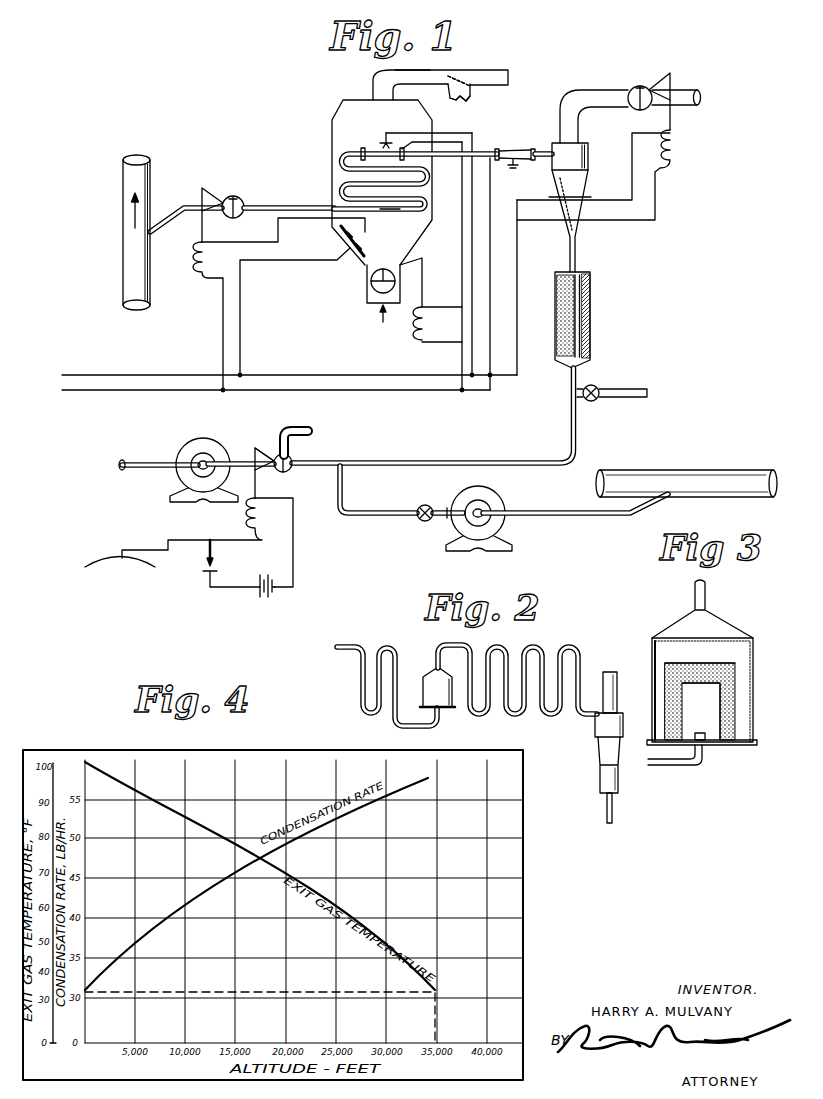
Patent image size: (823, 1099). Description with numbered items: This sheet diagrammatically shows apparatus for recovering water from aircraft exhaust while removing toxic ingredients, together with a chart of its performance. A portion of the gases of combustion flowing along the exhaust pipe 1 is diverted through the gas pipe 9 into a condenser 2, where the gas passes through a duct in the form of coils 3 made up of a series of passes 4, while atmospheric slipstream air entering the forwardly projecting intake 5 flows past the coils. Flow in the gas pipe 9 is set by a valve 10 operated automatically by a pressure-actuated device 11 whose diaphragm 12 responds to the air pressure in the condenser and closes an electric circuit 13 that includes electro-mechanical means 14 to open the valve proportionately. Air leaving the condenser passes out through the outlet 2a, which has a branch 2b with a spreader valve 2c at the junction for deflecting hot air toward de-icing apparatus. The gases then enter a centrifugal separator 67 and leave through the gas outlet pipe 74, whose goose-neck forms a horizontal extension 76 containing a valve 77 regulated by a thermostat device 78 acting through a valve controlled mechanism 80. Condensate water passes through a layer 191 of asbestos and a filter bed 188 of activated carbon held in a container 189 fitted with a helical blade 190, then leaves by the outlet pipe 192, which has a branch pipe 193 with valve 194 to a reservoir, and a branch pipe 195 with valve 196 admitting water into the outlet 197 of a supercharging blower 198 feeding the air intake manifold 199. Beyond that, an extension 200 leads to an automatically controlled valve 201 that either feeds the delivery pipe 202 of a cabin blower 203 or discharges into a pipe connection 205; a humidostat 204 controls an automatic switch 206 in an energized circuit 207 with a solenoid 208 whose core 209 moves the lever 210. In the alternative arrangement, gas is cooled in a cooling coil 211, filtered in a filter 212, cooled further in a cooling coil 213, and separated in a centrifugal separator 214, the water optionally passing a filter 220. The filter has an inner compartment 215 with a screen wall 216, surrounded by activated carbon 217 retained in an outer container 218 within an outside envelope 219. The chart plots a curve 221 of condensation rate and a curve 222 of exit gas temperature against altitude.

In FIG. 1, the exhaust pipe 1 is at (147, 181).
In FIG. 1, the condenser 2 is at (332, 135).
In FIG. 1, the outlet 2a is at (415, 72).
In FIG. 1, the branch 2b is at (472, 98).
In FIG. 1, the spreader valve 2c is at (468, 75).
In FIG. 1, the coils 3 is at (340, 182).
In FIG. 1, the passes 4 is at (388, 201).
In FIG. 1, the intake 5 is at (367, 295).
In FIG. 1, the gas pipe 9 is at (262, 204).
In FIG. 1, the valve 10 is at (231, 196).
In FIG. 1, the pressure-actuated device 11 is at (352, 250).
In FIG. 1, the diaphragm 12 is at (355, 241).
In FIG. 1, the electric circuit 13 is at (286, 261).
In FIG. 1, the electro-mechanical means 14 is at (198, 266).
In FIG. 1, the separator 67 is at (590, 165).
In FIG. 1, the gas outlet pipe 74 is at (566, 109).
In FIG. 1, the horizontal extension 76 is at (687, 96).
In FIG. 1, the valve 77 is at (637, 86).
In FIG. 1, the thermostat device 78 is at (509, 150).
In FIG. 1, the valve controlled mechanism 80 is at (676, 150).
In FIG. 1, the filter bed 188 is at (557, 304).
In FIG. 1, the container 189 is at (592, 300).
In FIG. 1, the helical blade 190 is at (562, 322).
In FIG. 1, the layer of asbestos 191 is at (588, 274).
In FIG. 1, the outlet pipe 192 is at (569, 410).
In FIG. 1, the branch pipe 193 is at (634, 389).
In FIG. 1, the valve 194 is at (599, 386).
In FIG. 1, the branch pipe 195 is at (392, 518).
In FIG. 1, the valve 196 is at (431, 506).
In FIG. 1, the outlet 197 is at (533, 510).
In FIG. 1, the supercharging blower 198 is at (486, 498).
In FIG. 1, the air intake manifold 199 is at (683, 470).
In FIG. 1, the extension 200 is at (240, 458).
In FIG. 1, the automatically controlled valve 201 is at (293, 460).
In FIG. 1, the delivery pipe 202 is at (168, 461).
In FIG. 1, the blower 203 is at (183, 438).
In FIG. 1, the humidostat 204 is at (130, 562).
In FIG. 1, the pipe connection 205 is at (300, 420).
In FIG. 1, the automatic switch 206 is at (218, 565).
In FIG. 1, the energized circuit 207 is at (295, 530).
In FIG. 1, the solenoid 208 is at (249, 512).
In FIG. 1, the core 209 is at (258, 495).
In FIG. 1, the lever 210 is at (271, 447).
In FIG. 2, the cooling coil 211 is at (359, 681).
In FIG. 2, the filter 212 is at (455, 700).
In FIG. 3, the filter 212 is at (753, 653).
In FIG. 2, the cooling coil 213 is at (551, 650).
In FIG. 2, the centrifugal separator 214 is at (600, 726).
In FIG. 3, the inner compartment 215 is at (712, 732).
In FIG. 3, the wall 216 is at (683, 705).
In FIG. 3, the activated carbon 217 is at (700, 663).
In FIG. 3, the outer container 218 is at (736, 683).
In FIG. 3, the outside envelope 219 is at (663, 650).
In FIG. 2, the filter 220 is at (618, 786).
In FIG. 4, the curve 221 is at (183, 907).
In FIG. 4, the curve 222 is at (197, 830).